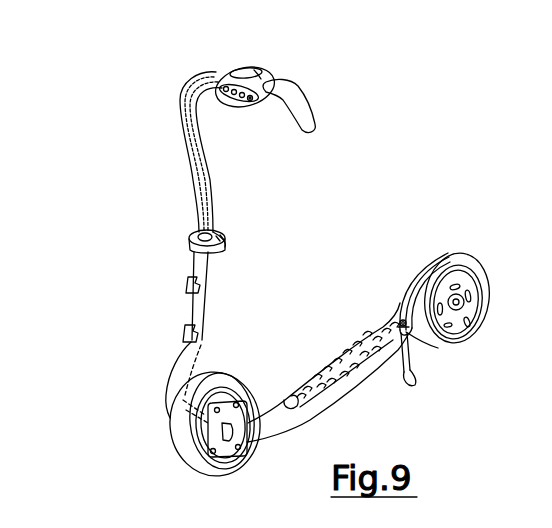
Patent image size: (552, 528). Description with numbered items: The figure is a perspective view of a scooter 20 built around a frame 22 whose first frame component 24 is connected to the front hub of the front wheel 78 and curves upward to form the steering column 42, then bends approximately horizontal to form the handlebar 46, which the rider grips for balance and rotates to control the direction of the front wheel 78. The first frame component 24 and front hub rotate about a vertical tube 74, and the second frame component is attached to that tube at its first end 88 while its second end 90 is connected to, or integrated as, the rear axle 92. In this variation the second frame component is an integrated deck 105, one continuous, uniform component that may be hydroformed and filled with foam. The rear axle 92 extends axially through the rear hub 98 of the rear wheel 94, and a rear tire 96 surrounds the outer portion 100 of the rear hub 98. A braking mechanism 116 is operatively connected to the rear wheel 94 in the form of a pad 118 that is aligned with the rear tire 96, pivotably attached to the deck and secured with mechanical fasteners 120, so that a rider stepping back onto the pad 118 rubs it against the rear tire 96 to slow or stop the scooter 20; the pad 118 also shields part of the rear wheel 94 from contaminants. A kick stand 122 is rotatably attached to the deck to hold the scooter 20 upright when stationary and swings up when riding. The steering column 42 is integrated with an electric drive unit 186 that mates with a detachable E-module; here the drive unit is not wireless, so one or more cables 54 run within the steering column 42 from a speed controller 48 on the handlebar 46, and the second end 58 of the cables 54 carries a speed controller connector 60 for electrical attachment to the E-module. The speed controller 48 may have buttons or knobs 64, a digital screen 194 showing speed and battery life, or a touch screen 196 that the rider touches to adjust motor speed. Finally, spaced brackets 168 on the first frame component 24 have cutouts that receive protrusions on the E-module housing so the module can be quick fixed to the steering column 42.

The scooter 20 is at (376, 88).
The frame 22 is at (214, 203).
The first frame component 24 is at (192, 262).
The steering column 42 is at (208, 160).
The handlebar 46 is at (282, 88).
The speed controller 48 is at (228, 71).
The cables 54 is at (183, 128).
The second end of the cables 58 is at (196, 222).
The speed controller connector 60 is at (226, 249).
The buttons or knobs 64 is at (252, 104).
The vertical tube 74 is at (248, 413).
The front wheel 78 is at (170, 440).
The first end of the second frame component 88 is at (243, 438).
The second end of the second frame component 90 is at (402, 298).
The rear axle 92 is at (472, 300).
The rear wheel 94 is at (490, 303).
The rear tire 96 is at (425, 340).
The rear hub 98 is at (457, 301).
The outer portion of the rear hub 100 is at (473, 334).
The integrated deck 105 is at (322, 358).
The braking mechanism 116 is at (425, 275).
The pad 118 is at (414, 283).
The mechanical fasteners 120 is at (413, 378).
The kick stand 122 is at (398, 372).
The brackets 168 is at (188, 290).
The electric drive unit 186 is at (196, 184).
The digital screen 194 is at (242, 69).
The touch screen 196 is at (254, 70).